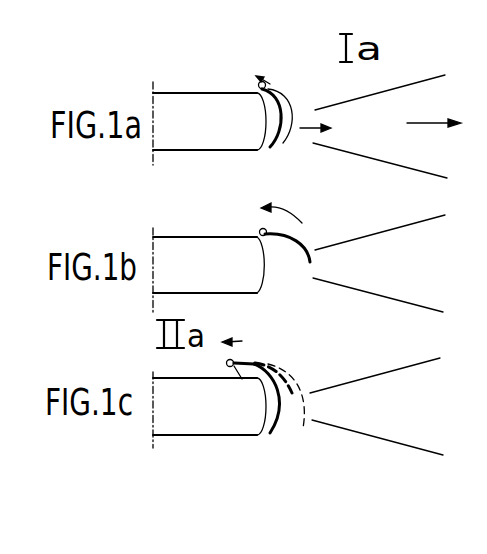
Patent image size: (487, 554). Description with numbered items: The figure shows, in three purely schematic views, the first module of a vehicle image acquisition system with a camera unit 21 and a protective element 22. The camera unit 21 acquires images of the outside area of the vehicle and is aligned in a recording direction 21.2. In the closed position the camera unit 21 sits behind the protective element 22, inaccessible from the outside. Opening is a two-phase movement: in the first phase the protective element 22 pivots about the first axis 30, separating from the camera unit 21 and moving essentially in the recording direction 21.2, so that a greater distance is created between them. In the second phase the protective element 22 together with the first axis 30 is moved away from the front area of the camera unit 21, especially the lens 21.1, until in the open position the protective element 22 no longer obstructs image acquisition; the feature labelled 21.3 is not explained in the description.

In FIG. 1a, the camera unit 21 is at (193, 120).
In FIG. 1c, the camera unit 21 is at (180, 418).
In FIG. 1c, the lens 21.1 is at (273, 420).
In FIG. 1a, the recording direction 21.2 is at (423, 123).
In FIG. 1a, the pivotable flap 21.3 is at (307, 130).
In FIG. 1c, the pivotable flap 21.3 is at (242, 340).
In FIG. 1b, the protective element 22 is at (302, 237).
In FIG. 1c, the protective element 22 is at (242, 379).
In FIG. 1b, the first axis 30 is at (258, 228).